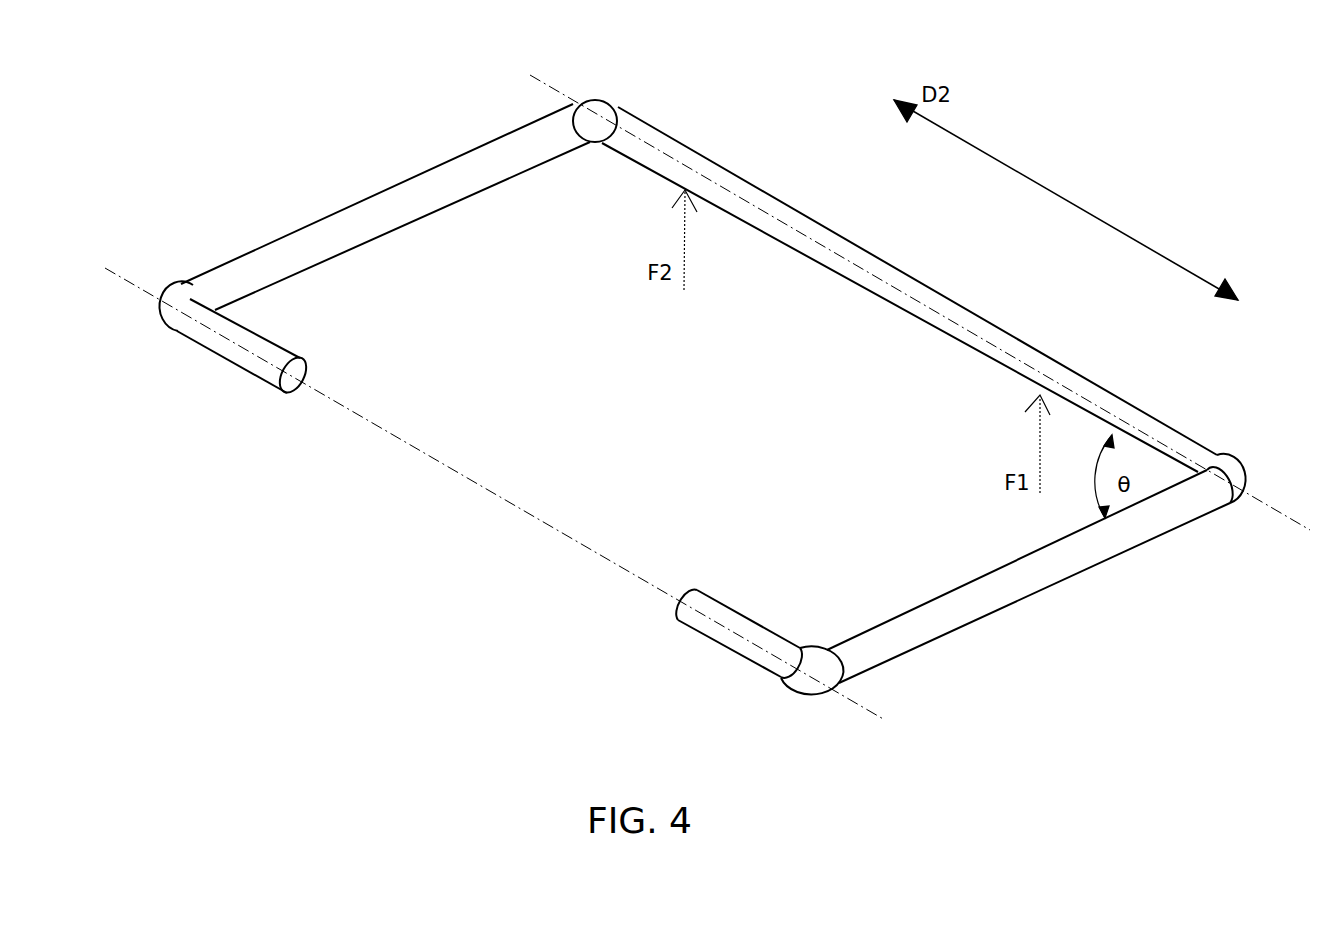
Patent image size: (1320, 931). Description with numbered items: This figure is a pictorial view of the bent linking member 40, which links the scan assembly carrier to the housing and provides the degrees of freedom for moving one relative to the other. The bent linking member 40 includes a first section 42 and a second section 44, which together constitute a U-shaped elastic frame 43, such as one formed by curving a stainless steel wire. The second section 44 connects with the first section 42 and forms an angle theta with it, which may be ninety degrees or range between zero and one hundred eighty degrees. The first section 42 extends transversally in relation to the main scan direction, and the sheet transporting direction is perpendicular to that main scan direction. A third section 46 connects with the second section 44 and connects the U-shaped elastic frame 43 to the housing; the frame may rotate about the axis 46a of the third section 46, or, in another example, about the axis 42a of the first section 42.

The bent linking member 40 is at (698, 58).
The first section 42 is at (827, 238).
The axis of the first section 42a is at (990, 343).
The U-shaped elastic frame 43 is at (164, 122).
The second section 44 is at (393, 205).
The third section 46 is at (238, 358).
The axis of the third section 46a is at (543, 523).